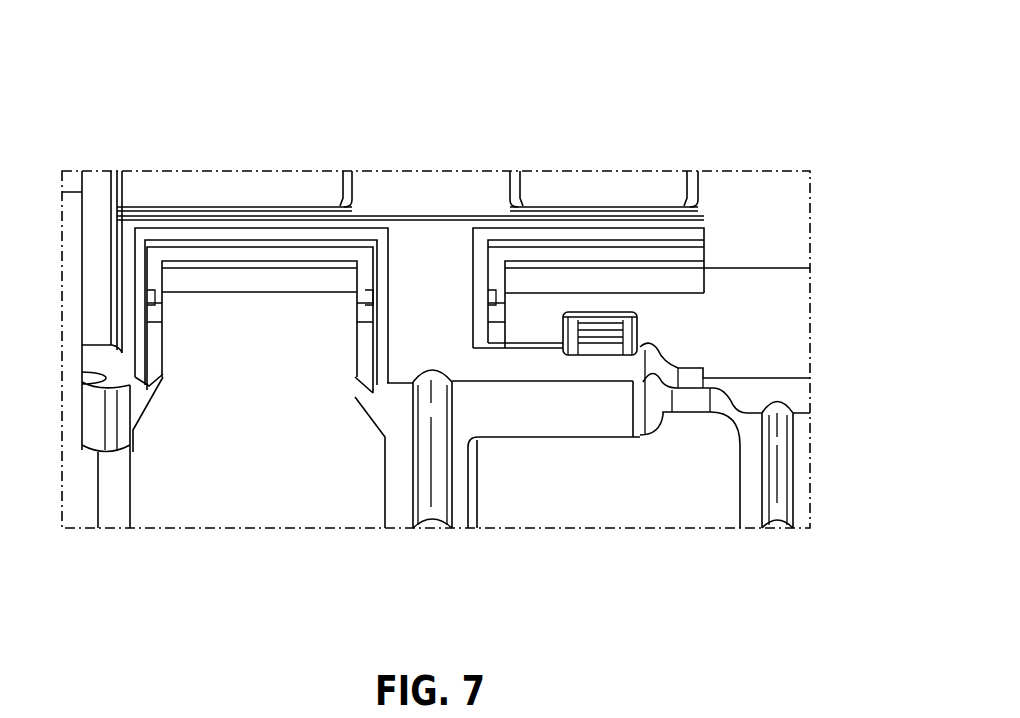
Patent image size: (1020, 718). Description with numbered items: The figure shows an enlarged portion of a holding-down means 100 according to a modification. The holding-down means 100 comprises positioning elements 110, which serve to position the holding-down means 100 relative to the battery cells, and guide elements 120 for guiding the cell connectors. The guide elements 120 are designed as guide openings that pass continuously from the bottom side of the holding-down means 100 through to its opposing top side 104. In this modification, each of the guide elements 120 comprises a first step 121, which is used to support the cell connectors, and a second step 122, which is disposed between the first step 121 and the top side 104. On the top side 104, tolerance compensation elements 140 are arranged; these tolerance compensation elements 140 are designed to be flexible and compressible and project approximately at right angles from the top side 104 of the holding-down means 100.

The holding-down means 100 is at (689, 133).
The top side 104 is at (440, 252).
The positioning elements 110 is at (112, 517).
The guide elements 120 is at (742, 330).
The first step 121 is at (362, 275).
The second step 122 is at (142, 250).
The tolerance compensation elements 140 is at (385, 187).